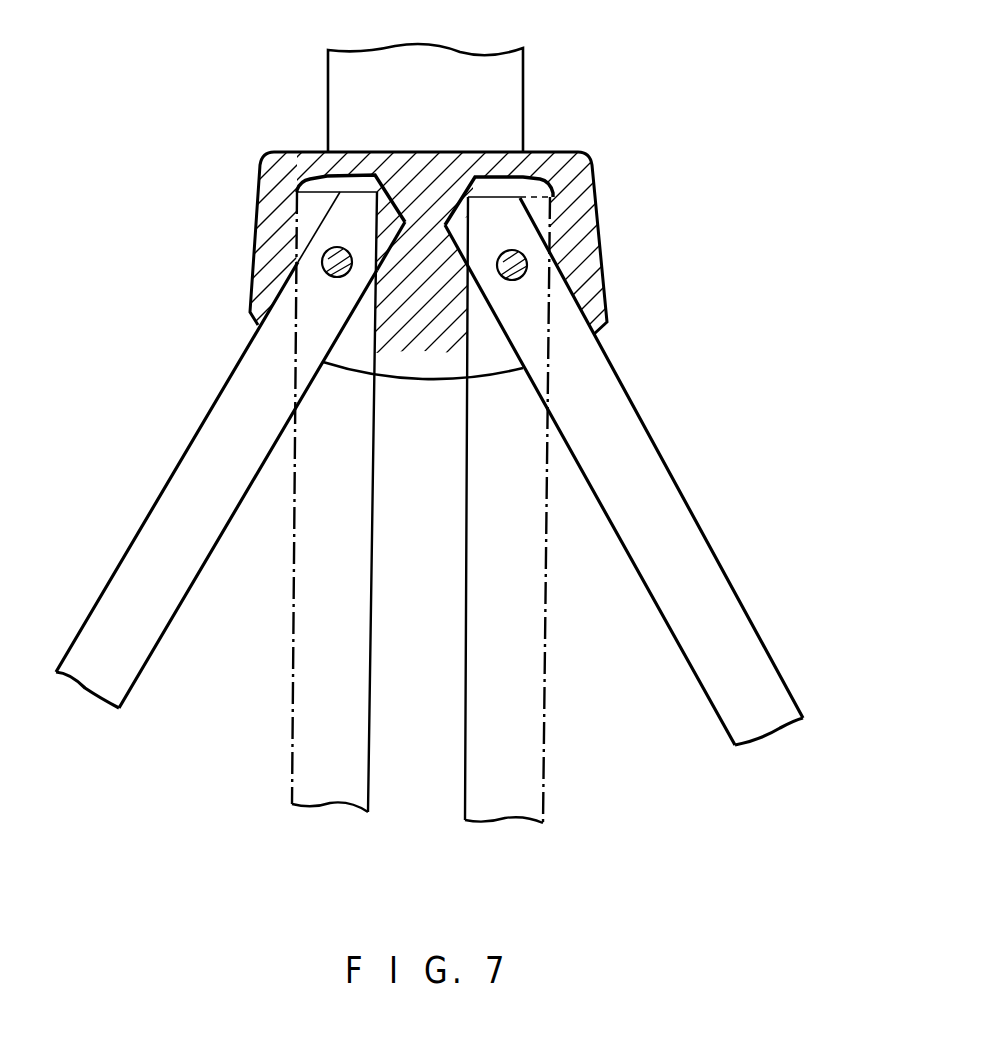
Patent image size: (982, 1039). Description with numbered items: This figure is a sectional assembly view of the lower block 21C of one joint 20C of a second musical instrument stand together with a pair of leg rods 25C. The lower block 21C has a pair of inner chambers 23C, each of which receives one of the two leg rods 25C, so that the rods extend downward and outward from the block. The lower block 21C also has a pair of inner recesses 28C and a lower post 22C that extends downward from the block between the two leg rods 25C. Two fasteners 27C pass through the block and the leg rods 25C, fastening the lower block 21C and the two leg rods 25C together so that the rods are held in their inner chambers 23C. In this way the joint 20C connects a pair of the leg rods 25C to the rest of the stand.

The joint 20C is at (322, 136).
The lower block 21C is at (268, 220).
The lower post 22C is at (420, 355).
The inner chamber 23C is at (398, 228).
The leg rod 25C is at (190, 488).
The fastener 27C is at (322, 268).
The inner recess 28C is at (392, 207).